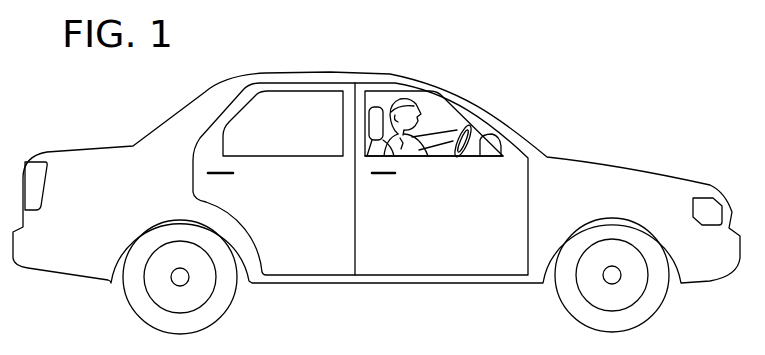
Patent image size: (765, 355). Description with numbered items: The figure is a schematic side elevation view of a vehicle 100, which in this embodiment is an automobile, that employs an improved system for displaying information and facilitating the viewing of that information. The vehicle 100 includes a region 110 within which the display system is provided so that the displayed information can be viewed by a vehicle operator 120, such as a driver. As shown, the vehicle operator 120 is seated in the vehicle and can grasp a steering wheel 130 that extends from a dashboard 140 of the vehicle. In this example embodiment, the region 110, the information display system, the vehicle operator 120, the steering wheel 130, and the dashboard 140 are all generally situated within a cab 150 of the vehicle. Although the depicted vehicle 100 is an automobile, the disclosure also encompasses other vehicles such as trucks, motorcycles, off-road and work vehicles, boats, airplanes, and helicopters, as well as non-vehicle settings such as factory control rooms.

The vehicle 100 is at (590, 62).
The region 110 is at (419, 100).
The vehicle operator 120 is at (435, 116).
The steering wheel 130 is at (477, 128).
The dashboard 140 is at (492, 159).
The cab 150 is at (270, 128).